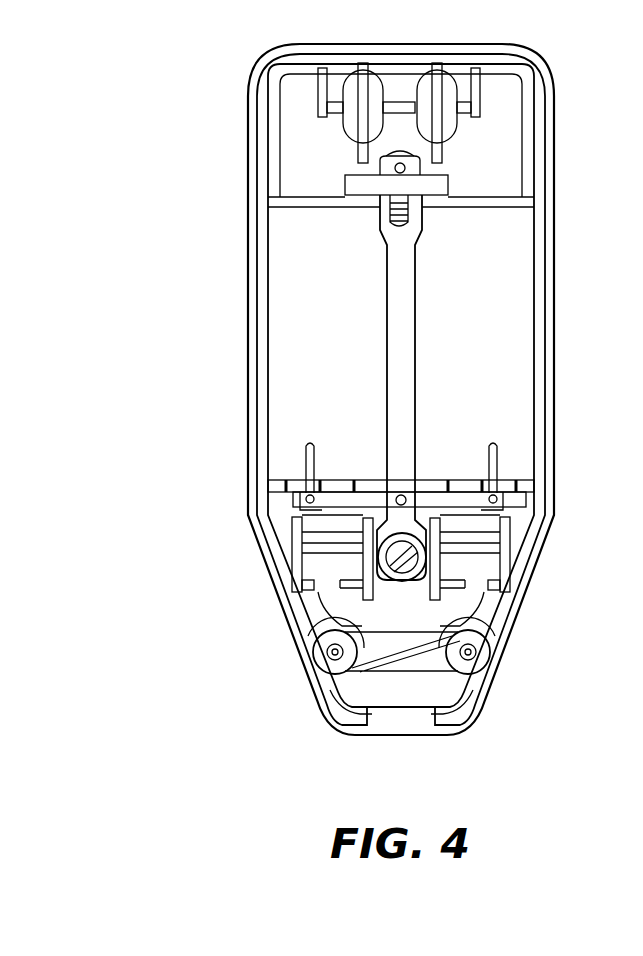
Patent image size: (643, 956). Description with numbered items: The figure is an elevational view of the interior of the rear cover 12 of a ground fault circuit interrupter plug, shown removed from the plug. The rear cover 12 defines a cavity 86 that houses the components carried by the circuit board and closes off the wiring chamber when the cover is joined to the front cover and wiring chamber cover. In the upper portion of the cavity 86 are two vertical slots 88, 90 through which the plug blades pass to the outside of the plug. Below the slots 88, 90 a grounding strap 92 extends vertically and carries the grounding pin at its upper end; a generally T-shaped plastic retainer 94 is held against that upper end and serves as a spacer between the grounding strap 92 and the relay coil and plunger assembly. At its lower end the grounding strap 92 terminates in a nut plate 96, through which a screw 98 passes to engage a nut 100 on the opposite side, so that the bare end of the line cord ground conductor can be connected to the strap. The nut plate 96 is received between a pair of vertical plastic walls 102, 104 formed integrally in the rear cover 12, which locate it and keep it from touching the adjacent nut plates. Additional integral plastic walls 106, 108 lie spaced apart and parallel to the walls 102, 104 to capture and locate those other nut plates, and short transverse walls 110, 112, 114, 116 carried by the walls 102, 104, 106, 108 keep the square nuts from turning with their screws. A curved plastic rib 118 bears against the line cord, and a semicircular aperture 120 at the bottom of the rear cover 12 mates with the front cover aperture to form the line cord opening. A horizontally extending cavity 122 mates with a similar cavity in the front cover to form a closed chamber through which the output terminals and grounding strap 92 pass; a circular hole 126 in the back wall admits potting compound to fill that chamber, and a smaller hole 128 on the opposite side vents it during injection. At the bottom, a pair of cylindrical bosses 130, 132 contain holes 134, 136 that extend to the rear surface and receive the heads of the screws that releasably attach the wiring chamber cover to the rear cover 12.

The rear cover 12 is at (241, 233).
The cavity 86 is at (345, 325).
The vertical slot 88 is at (440, 120).
The vertical slot 90 is at (354, 126).
The grounding strap 92 is at (405, 316).
The T-shaped plastic retainer 94 is at (436, 188).
The nut plate 96 is at (373, 592).
The screw 98 is at (425, 596).
The nut 100 is at (390, 535).
The vertical plastic wall 102 is at (320, 540).
The vertical plastic wall 104 is at (505, 532).
The integral plastic wall 106 is at (298, 565).
The integral plastic wall 108 is at (506, 568).
The short transverse wall 110 is at (326, 645).
The short transverse wall 112 is at (492, 647).
The short transverse wall 114 is at (308, 598).
The short transverse wall 116 is at (500, 600).
The curved plastic rib 118 is at (386, 664).
The semicircular aperture 120 is at (413, 727).
The horizontally extending cavity 122 is at (430, 500).
The circular hole 126 is at (305, 490).
The smaller hole 128 is at (502, 488).
The cylindrical boss 130 is at (500, 662).
The cylindrical boss 132 is at (318, 655).
The hole 134 is at (480, 682).
The hole 136 is at (318, 676).